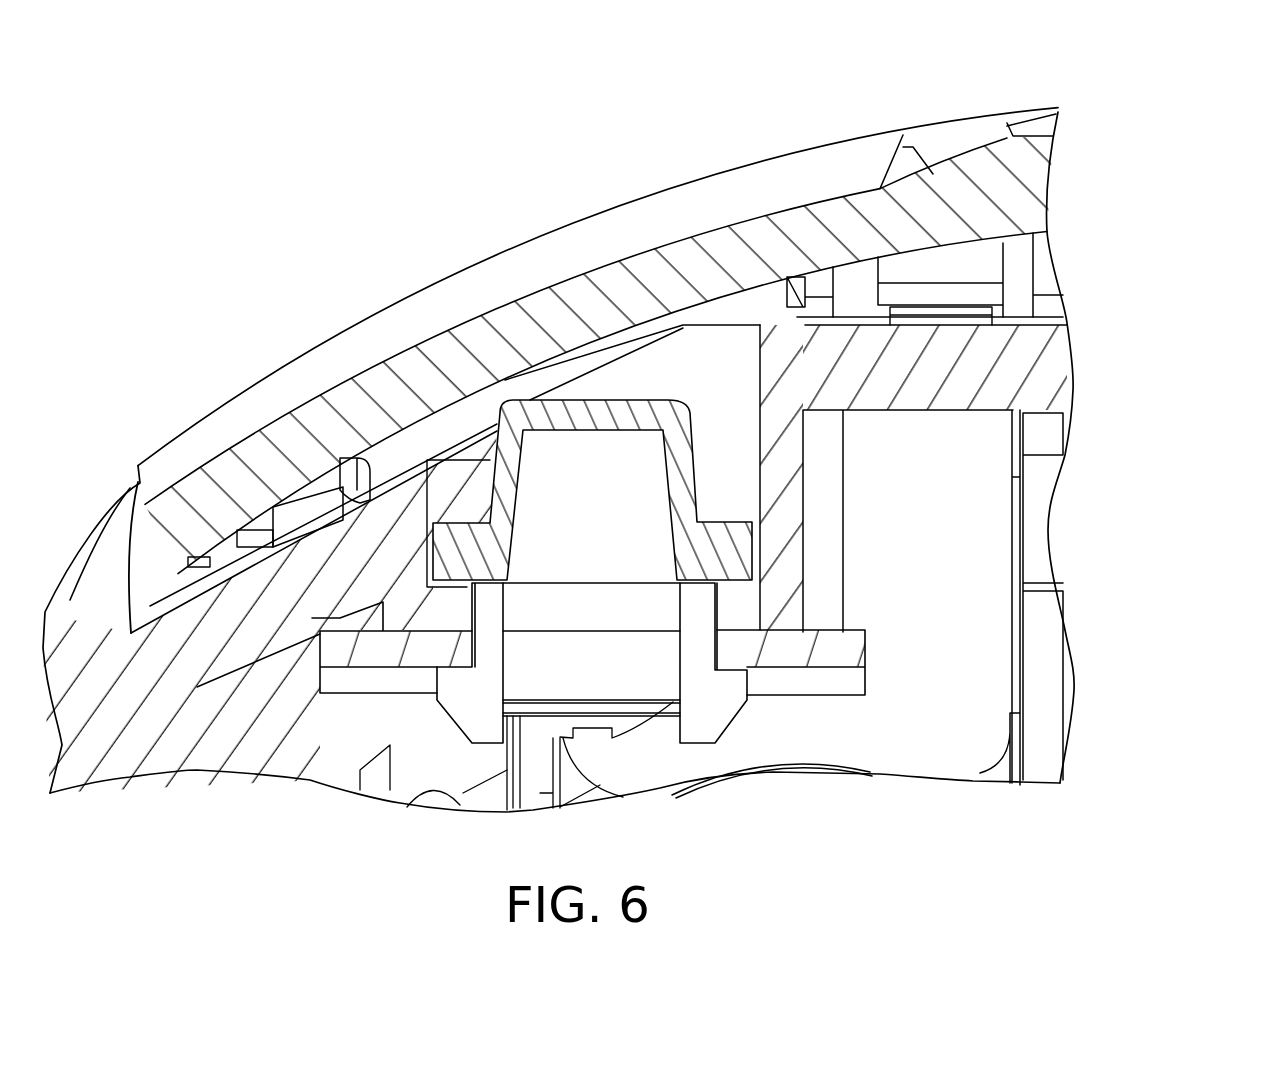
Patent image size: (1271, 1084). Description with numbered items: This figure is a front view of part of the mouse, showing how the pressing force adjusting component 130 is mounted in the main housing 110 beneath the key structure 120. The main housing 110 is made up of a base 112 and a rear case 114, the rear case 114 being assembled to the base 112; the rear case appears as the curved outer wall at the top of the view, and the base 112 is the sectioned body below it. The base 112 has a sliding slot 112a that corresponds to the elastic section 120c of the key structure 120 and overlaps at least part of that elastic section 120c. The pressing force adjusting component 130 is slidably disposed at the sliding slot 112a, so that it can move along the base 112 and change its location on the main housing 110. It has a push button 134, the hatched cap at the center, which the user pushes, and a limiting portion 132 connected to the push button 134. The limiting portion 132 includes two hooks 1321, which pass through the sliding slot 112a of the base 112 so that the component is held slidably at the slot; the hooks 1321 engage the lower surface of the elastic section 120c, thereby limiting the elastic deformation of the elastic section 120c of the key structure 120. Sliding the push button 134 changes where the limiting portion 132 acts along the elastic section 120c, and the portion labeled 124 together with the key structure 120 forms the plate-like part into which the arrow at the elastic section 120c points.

The main housing 110 is at (175, 363).
The base 112 is at (198, 633).
The rear case 114 is at (178, 455).
The sliding slot 112a is at (688, 653).
The pressing force adjusting component 130 is at (728, 485).
The limiting portion 132 is at (704, 610).
The hook 1321 is at (488, 648).
The push button 134 is at (577, 413).
The key structure 120 is at (842, 680).
The plate of frame 124 is at (842, 680).
The elastic section 120c is at (858, 657).